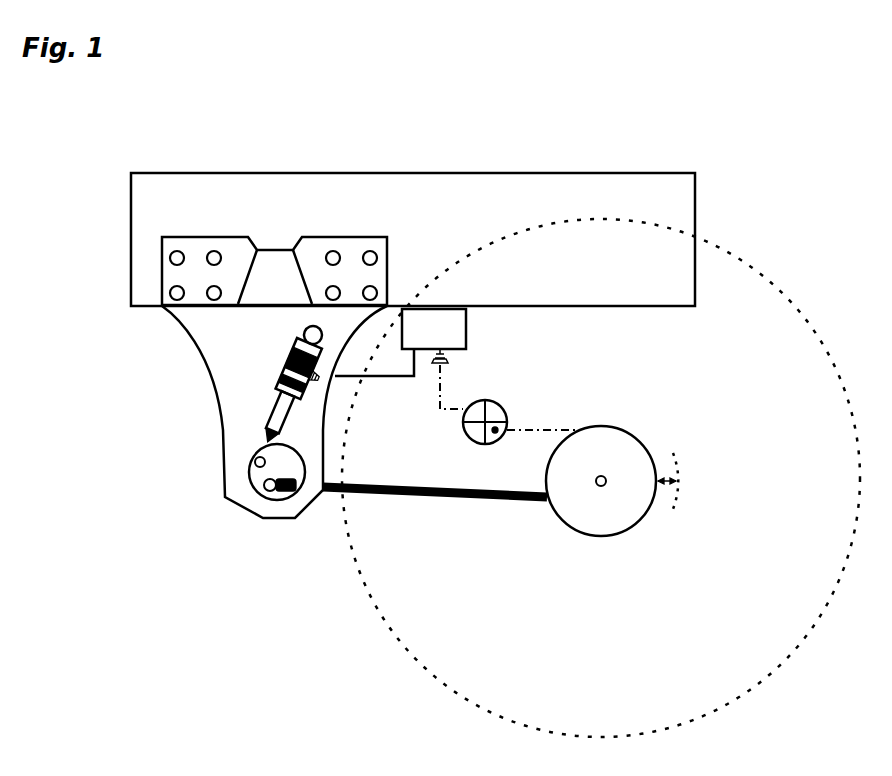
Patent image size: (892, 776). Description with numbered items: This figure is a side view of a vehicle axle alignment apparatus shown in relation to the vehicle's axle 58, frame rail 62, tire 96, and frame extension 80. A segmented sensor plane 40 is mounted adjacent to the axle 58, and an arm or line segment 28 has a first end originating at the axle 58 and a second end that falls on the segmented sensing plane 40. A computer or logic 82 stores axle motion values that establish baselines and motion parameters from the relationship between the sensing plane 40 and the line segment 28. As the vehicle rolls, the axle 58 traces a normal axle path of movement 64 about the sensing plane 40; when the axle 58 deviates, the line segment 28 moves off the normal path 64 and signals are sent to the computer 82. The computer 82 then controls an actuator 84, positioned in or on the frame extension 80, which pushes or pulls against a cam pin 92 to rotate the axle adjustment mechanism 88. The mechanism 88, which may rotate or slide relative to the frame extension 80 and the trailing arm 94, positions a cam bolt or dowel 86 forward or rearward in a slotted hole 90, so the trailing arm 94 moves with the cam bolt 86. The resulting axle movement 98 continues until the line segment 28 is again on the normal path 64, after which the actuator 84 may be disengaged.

The frame rail 62 is at (133, 199).
The frame extension 80 is at (213, 342).
The actuator 84 is at (281, 391).
The axle adjustment mechanism 88 is at (243, 499).
The cam pin 92 is at (255, 462).
The cam bolt or dowel 86 is at (272, 494).
The slotted hole 90 is at (289, 496).
The trailing arm 94 is at (425, 497).
The axle 58 is at (557, 525).
The axle movement 98 is at (663, 492).
The tire 96 is at (398, 637).
The computer or logic 82 is at (400, 342).
The segmented sensor plane 40 is at (494, 404).
The normal axle path of movement 64 is at (461, 424).
The line segment 28 is at (552, 428).